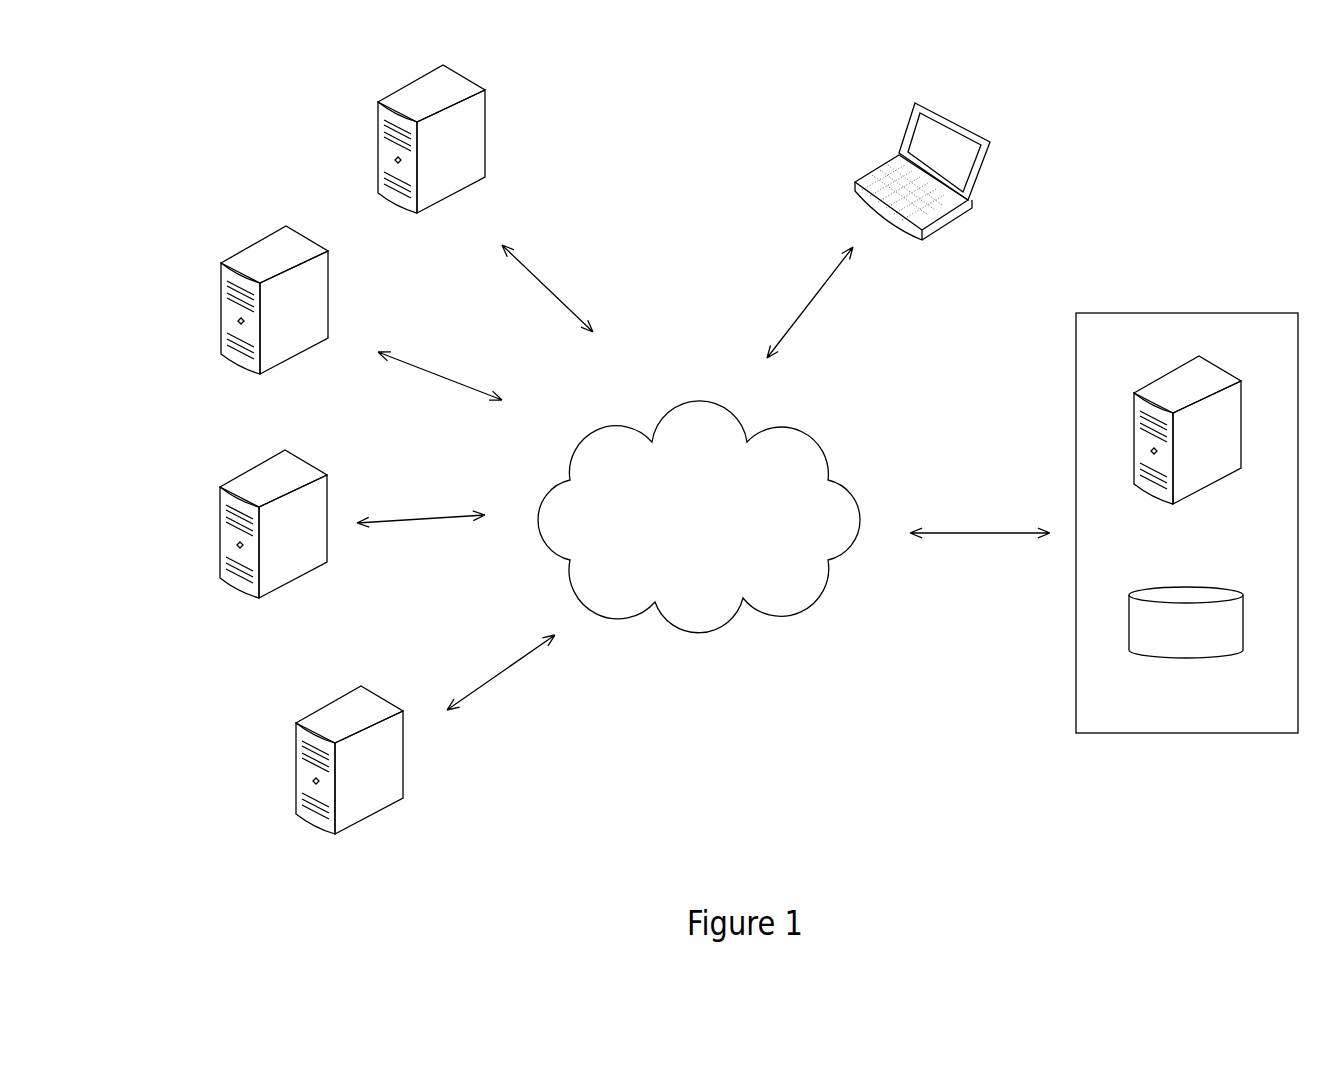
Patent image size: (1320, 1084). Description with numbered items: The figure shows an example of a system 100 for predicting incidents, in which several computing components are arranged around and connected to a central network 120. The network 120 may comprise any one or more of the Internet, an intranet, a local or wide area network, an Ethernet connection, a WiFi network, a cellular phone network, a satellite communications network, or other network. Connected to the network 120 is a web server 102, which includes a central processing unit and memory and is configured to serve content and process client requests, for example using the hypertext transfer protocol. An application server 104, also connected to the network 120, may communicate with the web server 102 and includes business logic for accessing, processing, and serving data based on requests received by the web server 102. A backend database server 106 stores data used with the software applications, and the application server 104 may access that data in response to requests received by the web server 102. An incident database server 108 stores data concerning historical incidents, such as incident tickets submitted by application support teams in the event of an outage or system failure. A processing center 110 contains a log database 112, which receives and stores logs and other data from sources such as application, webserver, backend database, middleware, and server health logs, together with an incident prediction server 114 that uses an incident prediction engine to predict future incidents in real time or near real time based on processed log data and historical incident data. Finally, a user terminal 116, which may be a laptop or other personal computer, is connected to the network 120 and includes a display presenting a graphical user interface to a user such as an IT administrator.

The system 100 is at (653, 156).
The web server 102 is at (427, 98).
The application server 104 is at (230, 307).
The backend database server 106 is at (228, 530).
The incident database server 108 is at (338, 719).
The processing center 110 is at (1162, 313).
The log database 112 is at (1155, 623).
The incident prediction server 114 is at (1167, 390).
The user terminal 116 is at (940, 140).
The network 120 is at (699, 517).